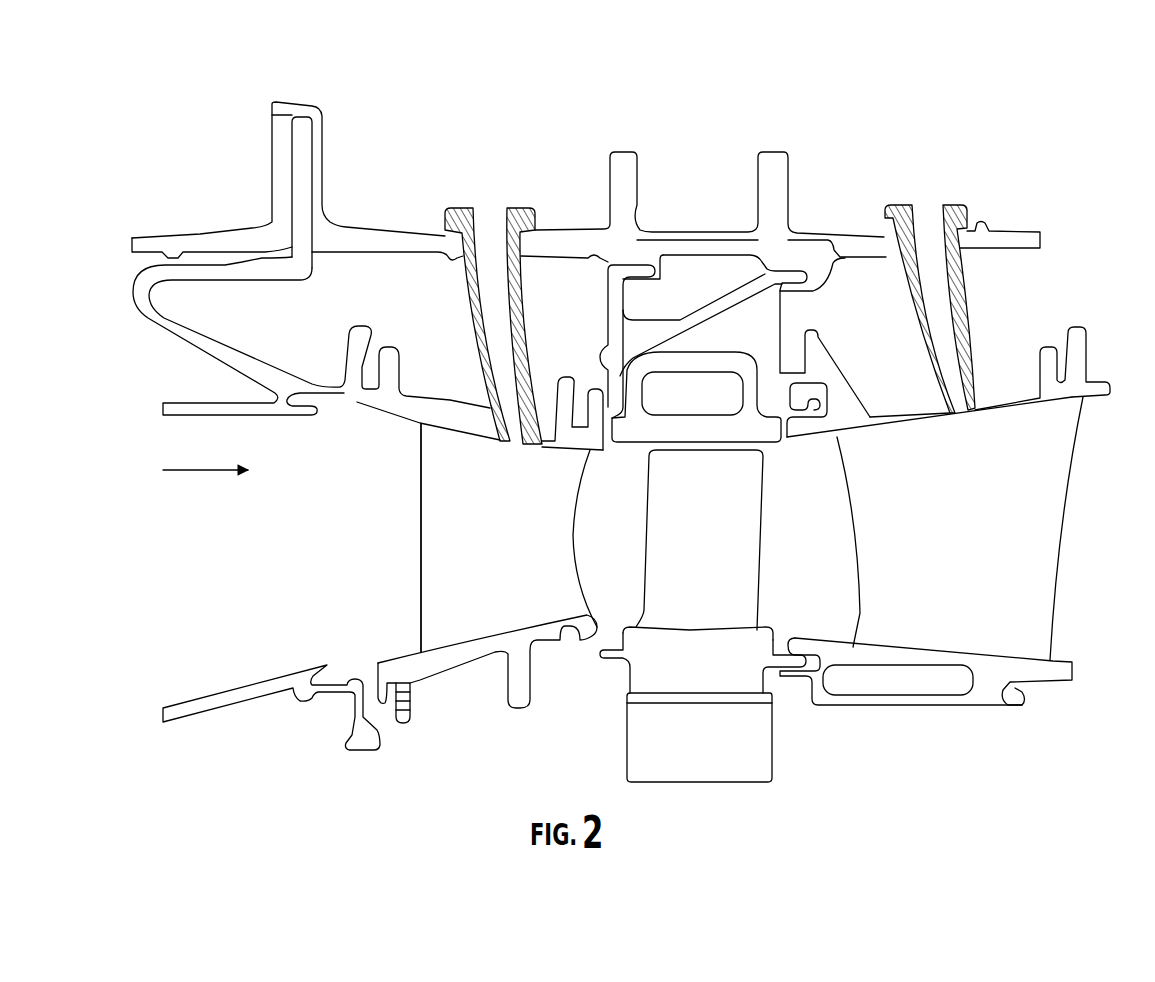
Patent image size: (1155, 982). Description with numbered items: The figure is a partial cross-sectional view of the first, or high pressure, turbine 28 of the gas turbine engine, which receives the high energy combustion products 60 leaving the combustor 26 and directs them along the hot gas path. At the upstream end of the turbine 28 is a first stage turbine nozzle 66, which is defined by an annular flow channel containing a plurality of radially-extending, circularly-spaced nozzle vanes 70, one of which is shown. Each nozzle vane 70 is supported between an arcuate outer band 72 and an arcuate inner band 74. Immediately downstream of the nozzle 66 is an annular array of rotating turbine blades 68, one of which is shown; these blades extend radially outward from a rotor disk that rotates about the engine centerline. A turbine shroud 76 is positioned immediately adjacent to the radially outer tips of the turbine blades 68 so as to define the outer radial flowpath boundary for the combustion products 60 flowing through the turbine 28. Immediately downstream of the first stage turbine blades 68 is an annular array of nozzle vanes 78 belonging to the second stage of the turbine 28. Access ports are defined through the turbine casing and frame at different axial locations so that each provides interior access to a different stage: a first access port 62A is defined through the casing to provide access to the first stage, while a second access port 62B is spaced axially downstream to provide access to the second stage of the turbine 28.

The first (high pressure) turbine 28 is at (556, 82).
The first access port 62A is at (487, 203).
The second access port 62B is at (925, 197).
The arcuate outer bands 72 is at (440, 405).
The turbine shroud 76 is at (720, 367).
The combustion products 60 is at (196, 470).
The first stage turbine nozzle 66 is at (414, 555).
The nozzle vanes 70 is at (502, 560).
The turbine blades 68 is at (707, 550).
The nozzle vanes of second stage 78 is at (949, 532).
The combustor 26 is at (190, 696).
The arcuate inner bands 74 is at (445, 658).